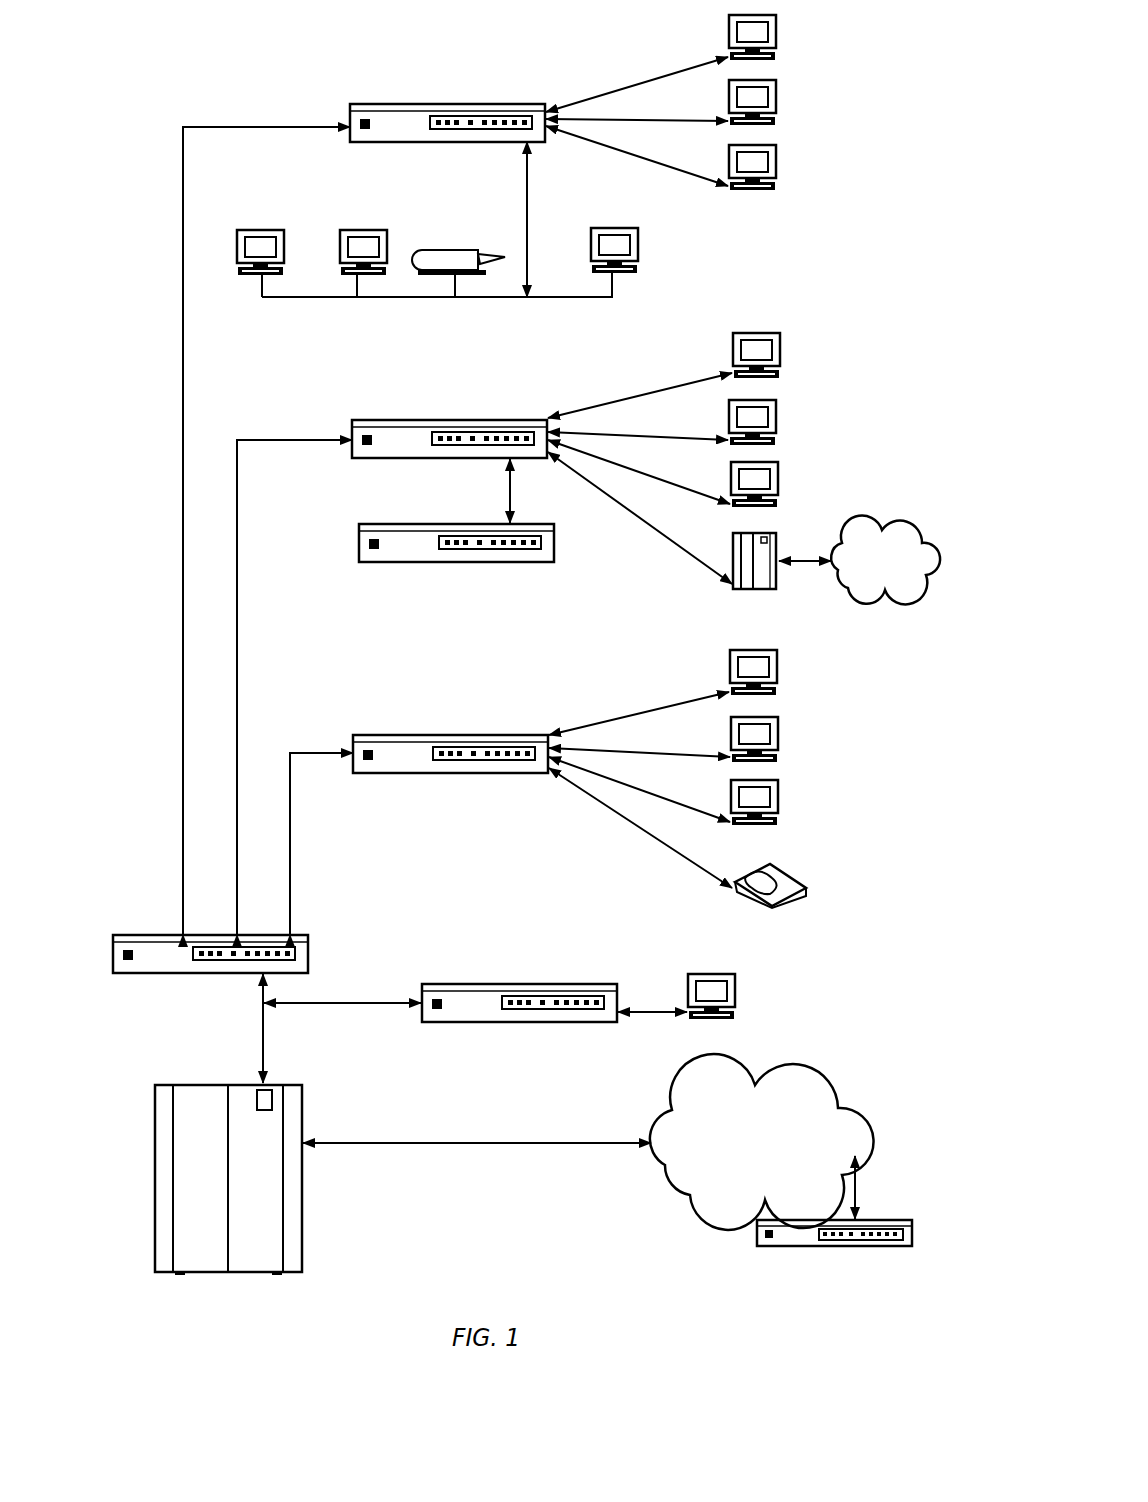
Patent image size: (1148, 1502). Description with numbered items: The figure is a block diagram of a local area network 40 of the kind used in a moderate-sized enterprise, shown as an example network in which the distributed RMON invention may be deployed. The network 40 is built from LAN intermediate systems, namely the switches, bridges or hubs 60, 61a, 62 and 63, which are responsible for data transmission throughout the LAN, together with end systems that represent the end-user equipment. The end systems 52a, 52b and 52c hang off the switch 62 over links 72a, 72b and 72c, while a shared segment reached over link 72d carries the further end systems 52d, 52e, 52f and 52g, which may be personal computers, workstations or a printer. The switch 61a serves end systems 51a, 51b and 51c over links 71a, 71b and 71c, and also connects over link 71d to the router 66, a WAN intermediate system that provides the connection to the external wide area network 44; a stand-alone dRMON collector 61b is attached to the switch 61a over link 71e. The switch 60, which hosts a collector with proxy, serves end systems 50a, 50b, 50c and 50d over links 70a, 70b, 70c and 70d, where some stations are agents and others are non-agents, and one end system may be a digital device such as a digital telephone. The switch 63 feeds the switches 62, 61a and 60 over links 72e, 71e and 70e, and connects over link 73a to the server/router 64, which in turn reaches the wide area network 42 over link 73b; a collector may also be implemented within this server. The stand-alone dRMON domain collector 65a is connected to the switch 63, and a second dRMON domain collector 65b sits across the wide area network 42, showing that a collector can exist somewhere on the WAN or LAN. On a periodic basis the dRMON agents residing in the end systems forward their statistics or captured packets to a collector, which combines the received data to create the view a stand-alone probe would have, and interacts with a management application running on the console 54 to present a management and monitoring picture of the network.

The local area network 40 is at (128, 508).
The wide area network 42 is at (818, 1096).
The wide area network 44 is at (880, 526).
The end system 50a is at (779, 661).
The end system 50b is at (780, 740).
The end system 50c is at (780, 802).
The end system 50d is at (775, 878).
The end system 51a is at (781, 348).
The end system 51b is at (779, 420).
The end system 51c is at (781, 482).
The end system 52a is at (779, 38).
The end system 52b is at (779, 100).
The end system 52c is at (781, 164).
The end system 52d is at (638, 247).
The end system 52e is at (452, 250).
The end system 52f is at (358, 234).
The end system 52g is at (250, 234).
The console 54 is at (739, 988).
The LAN intermediate system 60 is at (456, 736).
The LAN intermediate system 61a is at (456, 421).
The dRMON collector 61b is at (456, 525).
The LAN intermediate system 62 is at (456, 105).
The LAN intermediate system 63 is at (155, 936).
The WAN intermediate system 64 is at (155, 1145).
The dRMON domain collector 65a is at (459, 985).
The dRMON domain collector 65b is at (757, 1240).
The WAN intermediate system 66 is at (778, 551).
The link 70a is at (648, 713).
The link 70b is at (645, 752).
The link 70c is at (643, 796).
The link 70d is at (645, 838).
The link 70e is at (290, 753).
The link 71a is at (640, 396).
The link 71b is at (633, 435).
The link 71c is at (645, 476).
The link 71d is at (645, 521).
The link 71e is at (262, 439).
The link 72a is at (632, 80).
The link 72b is at (634, 118).
The link 72c is at (642, 152).
The link 72d is at (535, 191).
The link 72e is at (262, 126).
The link 73a is at (265, 1051).
The link 73b is at (500, 1143).